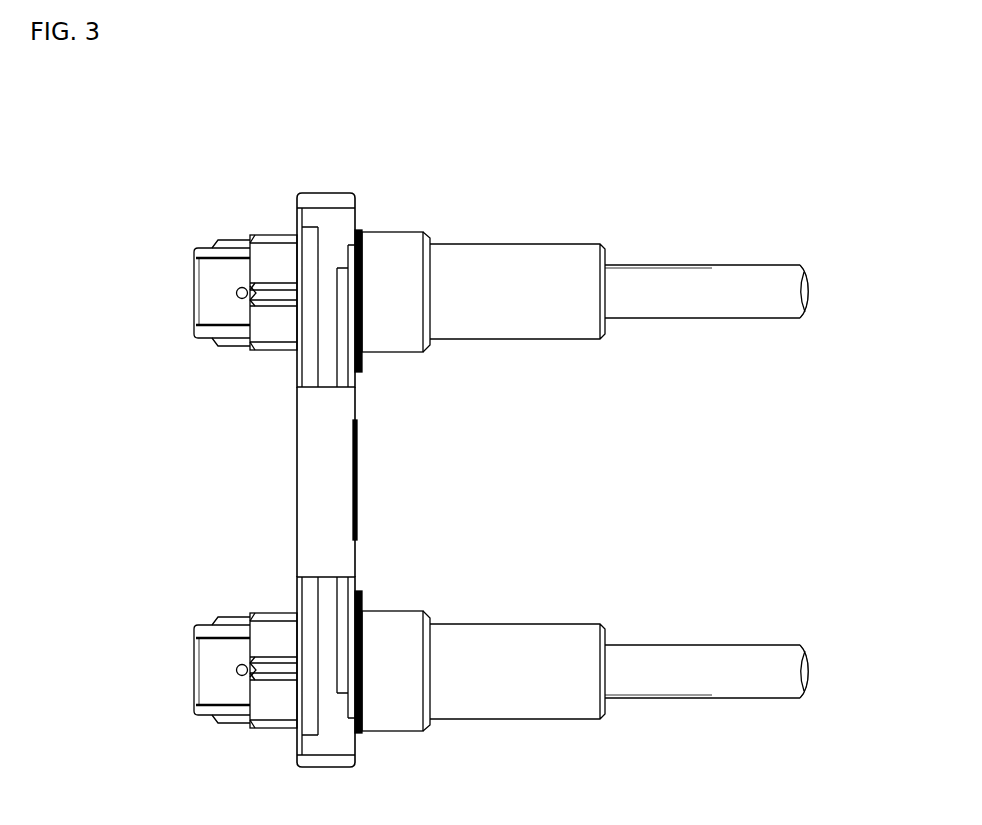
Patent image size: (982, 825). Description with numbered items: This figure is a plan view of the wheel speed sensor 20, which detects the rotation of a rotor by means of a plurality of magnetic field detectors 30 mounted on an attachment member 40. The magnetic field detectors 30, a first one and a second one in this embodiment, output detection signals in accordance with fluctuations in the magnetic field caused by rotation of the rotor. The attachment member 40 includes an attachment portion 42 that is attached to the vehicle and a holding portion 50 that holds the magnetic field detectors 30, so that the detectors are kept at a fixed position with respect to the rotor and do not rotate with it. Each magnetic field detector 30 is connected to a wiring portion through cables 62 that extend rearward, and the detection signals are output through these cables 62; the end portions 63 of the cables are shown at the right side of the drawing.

The wheel speed sensor 20 is at (470, 121).
The magnetic field detectors 30 is at (226, 240).
The attachment member 40 is at (329, 191).
The attachment portion 42 is at (342, 480).
The holding portion 50 is at (330, 770).
The cables 62 is at (678, 262).
The wire end portion 63 is at (773, 275).